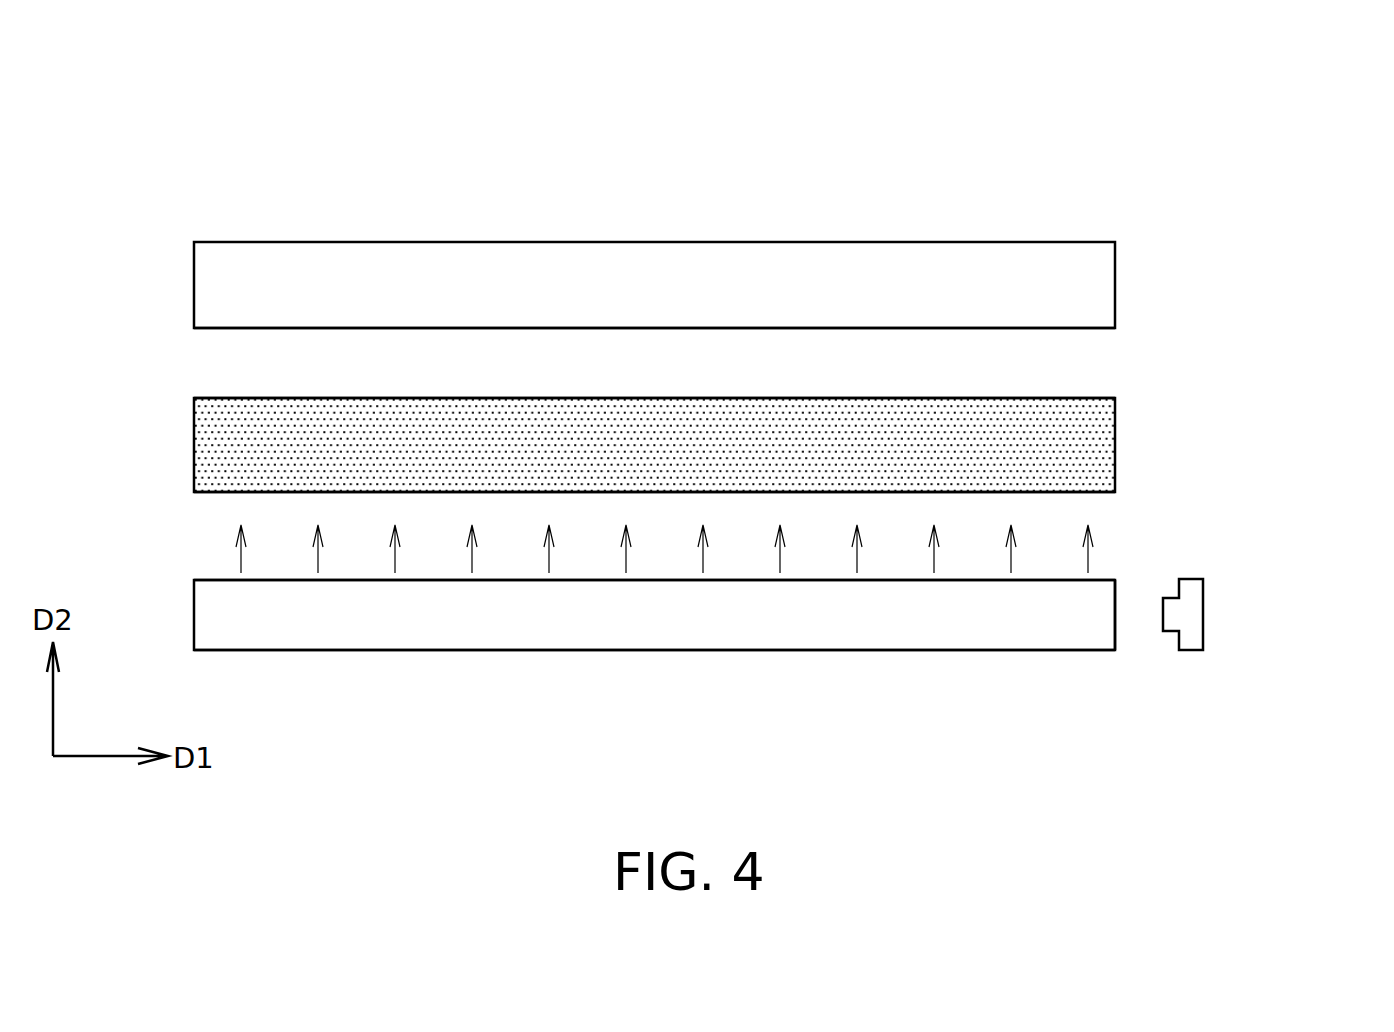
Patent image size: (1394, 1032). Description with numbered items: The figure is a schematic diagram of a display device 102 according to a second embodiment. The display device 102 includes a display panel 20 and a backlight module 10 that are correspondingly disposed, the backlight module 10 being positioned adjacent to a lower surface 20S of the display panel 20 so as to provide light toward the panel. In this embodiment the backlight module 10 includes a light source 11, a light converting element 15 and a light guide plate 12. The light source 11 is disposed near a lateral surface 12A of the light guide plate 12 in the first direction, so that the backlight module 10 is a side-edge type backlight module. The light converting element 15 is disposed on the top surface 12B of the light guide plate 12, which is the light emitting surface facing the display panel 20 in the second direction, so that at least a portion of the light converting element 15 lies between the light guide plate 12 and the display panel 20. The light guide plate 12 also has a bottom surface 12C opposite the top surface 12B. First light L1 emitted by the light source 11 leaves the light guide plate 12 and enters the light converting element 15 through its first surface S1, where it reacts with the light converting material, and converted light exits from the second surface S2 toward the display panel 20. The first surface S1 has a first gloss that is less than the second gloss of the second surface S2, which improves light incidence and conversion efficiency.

The display device 102 is at (1110, 120).
The display panel 20 is at (1093, 280).
The lower surface 20S is at (1097, 329).
The backlight module 10 is at (751, 554).
The light converting element 15 is at (1097, 438).
The second surface S2 is at (1058, 398).
The first surface S1 is at (1055, 492).
The first light L1 is at (240, 553).
The light guide plate 12 is at (1045, 636).
The top surface 12B is at (591, 580).
The bottom surface of light guide plate 12C is at (868, 650).
The lateral surface 12A is at (1117, 623).
The light source 11 is at (1188, 631).